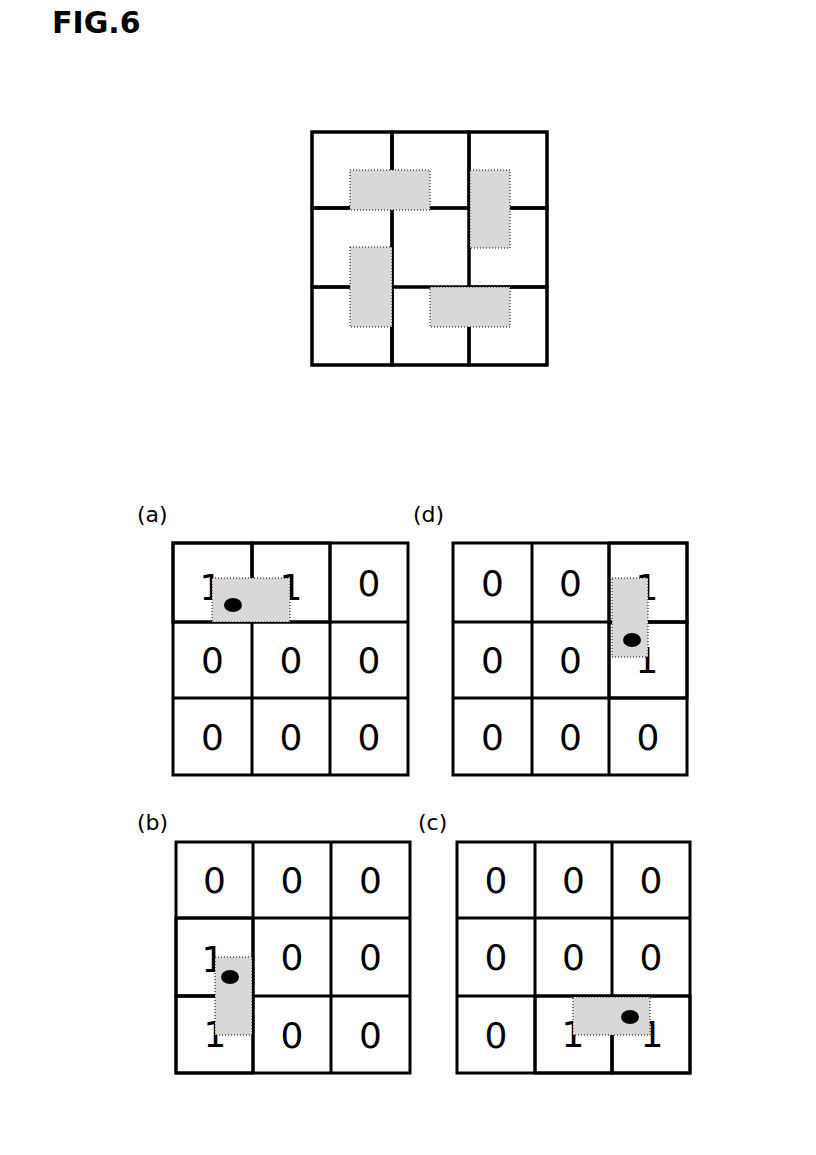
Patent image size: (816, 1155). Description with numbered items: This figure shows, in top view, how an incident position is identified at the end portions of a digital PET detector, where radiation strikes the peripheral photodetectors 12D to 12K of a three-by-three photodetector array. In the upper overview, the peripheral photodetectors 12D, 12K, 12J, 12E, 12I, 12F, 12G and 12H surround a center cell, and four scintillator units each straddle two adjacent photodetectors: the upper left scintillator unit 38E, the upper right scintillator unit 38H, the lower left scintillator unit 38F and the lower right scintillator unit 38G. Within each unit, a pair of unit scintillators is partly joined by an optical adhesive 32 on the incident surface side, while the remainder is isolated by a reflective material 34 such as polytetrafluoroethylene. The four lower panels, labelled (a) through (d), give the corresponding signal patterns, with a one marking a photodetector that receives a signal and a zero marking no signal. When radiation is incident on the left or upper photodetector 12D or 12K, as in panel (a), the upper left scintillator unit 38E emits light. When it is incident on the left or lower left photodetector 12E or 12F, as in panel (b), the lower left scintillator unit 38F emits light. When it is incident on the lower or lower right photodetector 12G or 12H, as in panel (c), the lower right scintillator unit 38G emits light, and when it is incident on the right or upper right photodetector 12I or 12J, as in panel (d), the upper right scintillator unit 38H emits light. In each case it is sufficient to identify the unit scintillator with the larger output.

The peripheral photodetector 12D is at (312, 152).
The peripheral photodetector 12E is at (312, 262).
The peripheral photodetector 12F is at (312, 350).
The peripheral photodetector 12G is at (430, 365).
The peripheral photodetector 12H is at (515, 365).
The peripheral photodetector 12I is at (547, 273).
The peripheral photodetector 12J is at (547, 183).
The peripheral photodetector 12K is at (443, 132).
The optical adhesive 32 is at (392, 188).
The reflective material 34 is at (408, 209).
The upper left scintillator unit 38E is at (350, 192).
The lower left scintillator unit 38F is at (350, 308).
The lower right scintillator unit 38G is at (510, 310).
The upper right scintillator unit 38H is at (500, 170).